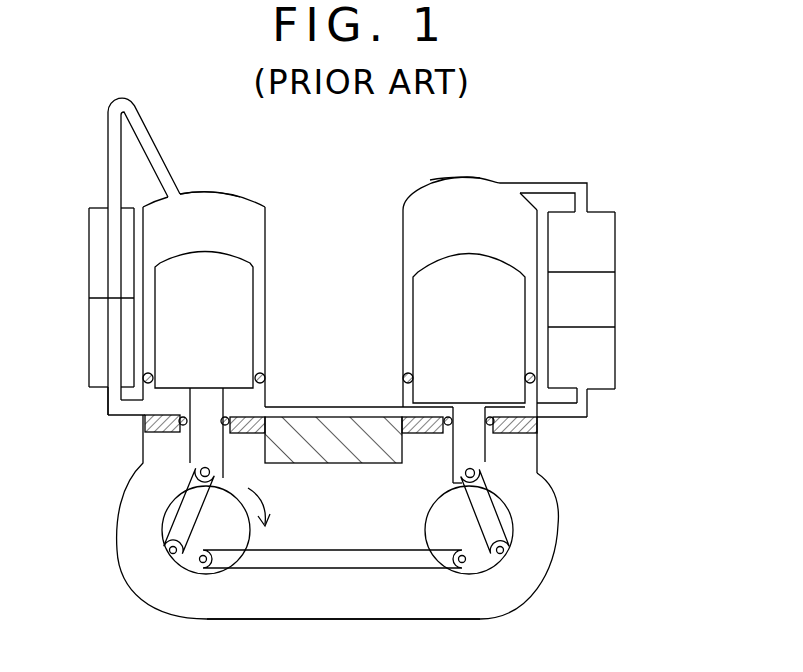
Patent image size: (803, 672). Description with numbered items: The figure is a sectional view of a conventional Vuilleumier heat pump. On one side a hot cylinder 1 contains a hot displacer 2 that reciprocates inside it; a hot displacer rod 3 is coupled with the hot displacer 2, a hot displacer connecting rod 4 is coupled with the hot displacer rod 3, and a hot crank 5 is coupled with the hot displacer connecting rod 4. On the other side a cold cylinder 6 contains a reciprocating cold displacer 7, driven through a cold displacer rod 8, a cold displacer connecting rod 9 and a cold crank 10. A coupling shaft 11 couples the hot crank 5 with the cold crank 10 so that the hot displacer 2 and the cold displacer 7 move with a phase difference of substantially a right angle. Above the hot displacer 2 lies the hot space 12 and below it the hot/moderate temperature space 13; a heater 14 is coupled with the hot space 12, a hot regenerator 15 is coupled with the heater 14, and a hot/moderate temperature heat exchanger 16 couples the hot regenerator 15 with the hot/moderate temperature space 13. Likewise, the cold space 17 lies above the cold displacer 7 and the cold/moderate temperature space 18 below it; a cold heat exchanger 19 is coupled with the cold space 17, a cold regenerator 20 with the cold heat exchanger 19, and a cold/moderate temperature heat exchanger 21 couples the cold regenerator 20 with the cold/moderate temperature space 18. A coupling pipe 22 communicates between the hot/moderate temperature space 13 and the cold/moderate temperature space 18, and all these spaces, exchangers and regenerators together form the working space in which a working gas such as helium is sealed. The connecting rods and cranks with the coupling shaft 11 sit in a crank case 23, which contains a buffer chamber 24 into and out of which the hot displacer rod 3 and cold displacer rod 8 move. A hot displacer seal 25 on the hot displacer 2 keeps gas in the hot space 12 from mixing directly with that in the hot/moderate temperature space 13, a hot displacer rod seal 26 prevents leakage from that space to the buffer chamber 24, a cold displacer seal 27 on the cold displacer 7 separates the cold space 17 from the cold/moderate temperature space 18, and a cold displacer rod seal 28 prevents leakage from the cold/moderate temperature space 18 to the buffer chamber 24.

The hot cylinder 1 is at (268, 226).
The hot displacer 2 is at (240, 298).
The hot displacer rod 3 is at (190, 452).
The hot displacer connecting rod 4 is at (187, 512).
The hot crank 5 is at (163, 523).
The cold cylinder 6 is at (403, 223).
The cold displacer 7 is at (428, 300).
The cold displacer rod 8 is at (478, 455).
The cold displacer connecting rod 9 is at (488, 518).
The cold crank 10 is at (512, 537).
The coupling shaft 11 is at (355, 568).
The hot space 12 is at (243, 215).
The hot/moderate temperature space 13 is at (250, 405).
The heater 14 is at (112, 159).
The hot regenerator 15 is at (89, 258).
The hot/moderate temperature heat exchanger 16 is at (100, 327).
The cold space 17 is at (448, 200).
The cold/moderate temperature space 18 is at (404, 400).
The cold heat exchanger 19 is at (605, 247).
The cold regenerator 20 is at (605, 303).
The cold/moderate temperature heat exchanger 21 is at (594, 368).
The coupling pipe 22 is at (305, 418).
The crank case 23 is at (530, 597).
The buffer chamber 24 is at (460, 602).
The hot displacer seal 25 is at (262, 371).
The hot displacer rod seal 26 is at (145, 423).
The cold displacer seal 27 is at (590, 389).
The cold displacer rod seal 28 is at (423, 440).